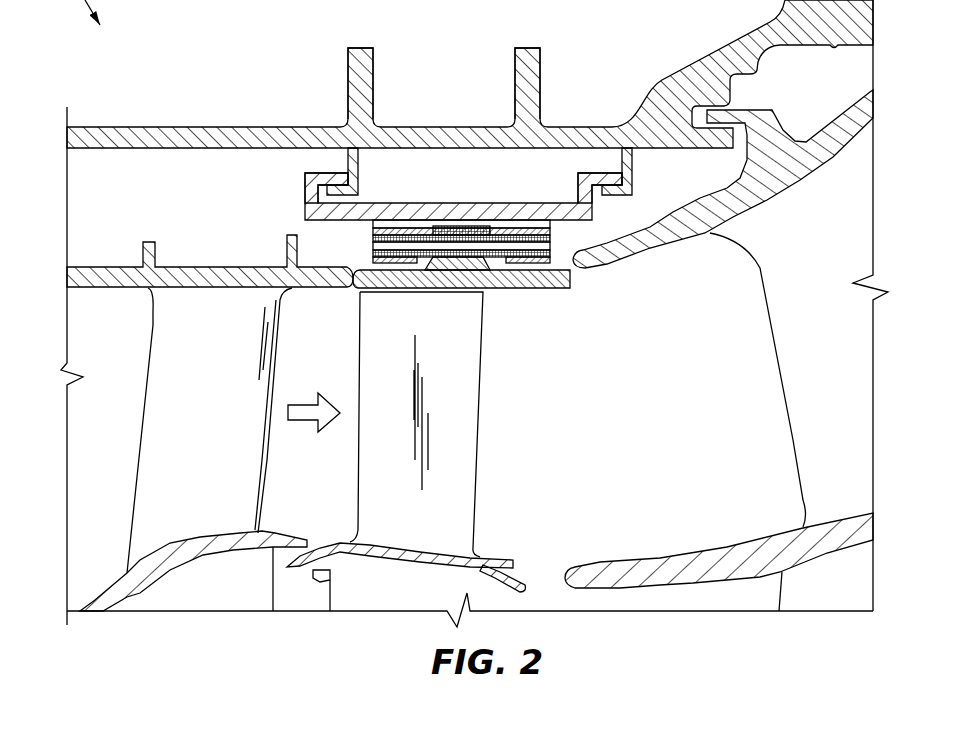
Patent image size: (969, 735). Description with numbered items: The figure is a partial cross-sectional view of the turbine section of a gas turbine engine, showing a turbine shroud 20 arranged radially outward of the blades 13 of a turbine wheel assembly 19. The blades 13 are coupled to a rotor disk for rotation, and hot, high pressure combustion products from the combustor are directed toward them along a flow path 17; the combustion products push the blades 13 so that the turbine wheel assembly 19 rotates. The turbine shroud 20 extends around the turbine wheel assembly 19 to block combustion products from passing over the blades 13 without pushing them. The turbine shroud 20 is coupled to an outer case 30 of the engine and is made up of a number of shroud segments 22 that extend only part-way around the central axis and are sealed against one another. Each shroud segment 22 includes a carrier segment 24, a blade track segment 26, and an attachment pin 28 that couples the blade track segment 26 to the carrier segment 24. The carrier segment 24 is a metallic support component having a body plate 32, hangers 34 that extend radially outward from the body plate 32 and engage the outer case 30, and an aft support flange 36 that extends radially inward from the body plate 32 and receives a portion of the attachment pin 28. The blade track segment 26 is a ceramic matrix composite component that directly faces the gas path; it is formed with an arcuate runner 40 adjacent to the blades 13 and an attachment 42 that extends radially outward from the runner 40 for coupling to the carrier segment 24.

The blades 13 is at (463, 497).
The flow path 17 is at (307, 404).
The turbine wheel assembly 19 is at (503, 552).
The turbine shroud 20 is at (290, 182).
The shroud segment 22 is at (303, 119).
The carrier segment 24 is at (540, 197).
The blade track segment 26 is at (517, 302).
The attachment pin 28 is at (630, 254).
The outer case 30 is at (178, 122).
The body plate 32 is at (475, 197).
The hangers 34 is at (302, 197).
The aft support flange 36 is at (553, 243).
The runner 40 is at (497, 292).
The attachment 42 is at (450, 225).